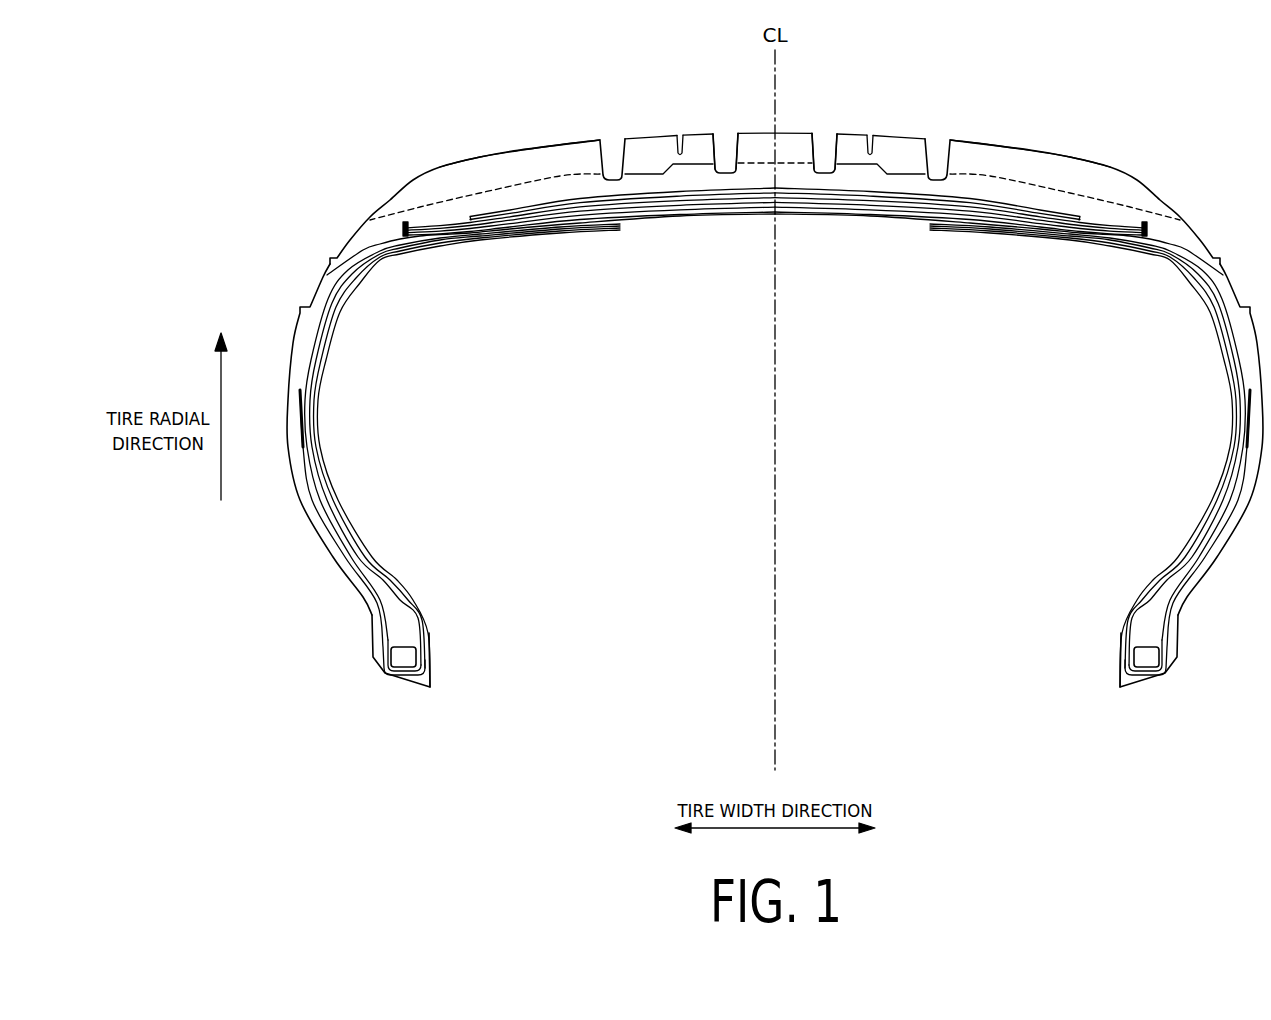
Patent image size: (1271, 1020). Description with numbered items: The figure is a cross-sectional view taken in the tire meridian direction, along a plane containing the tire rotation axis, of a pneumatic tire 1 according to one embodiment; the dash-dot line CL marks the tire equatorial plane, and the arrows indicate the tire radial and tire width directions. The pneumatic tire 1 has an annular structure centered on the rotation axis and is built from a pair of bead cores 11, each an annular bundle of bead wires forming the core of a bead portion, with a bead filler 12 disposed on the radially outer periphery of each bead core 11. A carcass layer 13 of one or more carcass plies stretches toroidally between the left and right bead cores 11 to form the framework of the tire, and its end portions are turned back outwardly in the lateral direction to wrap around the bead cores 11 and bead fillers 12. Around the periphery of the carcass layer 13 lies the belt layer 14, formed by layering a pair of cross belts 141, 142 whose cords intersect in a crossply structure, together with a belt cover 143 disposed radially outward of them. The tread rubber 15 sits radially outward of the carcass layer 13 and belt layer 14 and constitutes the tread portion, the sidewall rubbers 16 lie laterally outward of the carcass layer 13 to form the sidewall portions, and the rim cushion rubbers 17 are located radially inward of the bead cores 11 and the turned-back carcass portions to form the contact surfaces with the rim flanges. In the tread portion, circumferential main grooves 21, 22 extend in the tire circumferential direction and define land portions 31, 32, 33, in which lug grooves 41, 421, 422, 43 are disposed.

The pneumatic tire 1 is at (1065, 101).
The bead core 11 is at (403, 657).
The bead filler 12 is at (383, 597).
The carcass layer 13 is at (1157, 260).
The belt layer 14 is at (775, 268).
The cross belt 141 is at (960, 299).
The cross belt 142 is at (1047, 213).
The belt cover 143 is at (988, 207).
The tread rubber 15 is at (1167, 223).
The sidewall rubber 16 is at (302, 337).
The rim cushion rubber 17 is at (357, 590).
The circumferential main groove 21 is at (727, 143).
The circumferential main groove 22 is at (613, 150).
The land portion 31 is at (797, 130).
The land portion 32 is at (647, 138).
The land portion 33 is at (485, 150).
The lug groove 41 is at (752, 163).
The lug groove 421 is at (703, 163).
The lug groove 422 is at (776, 98).
The lug groove 43 is at (548, 173).